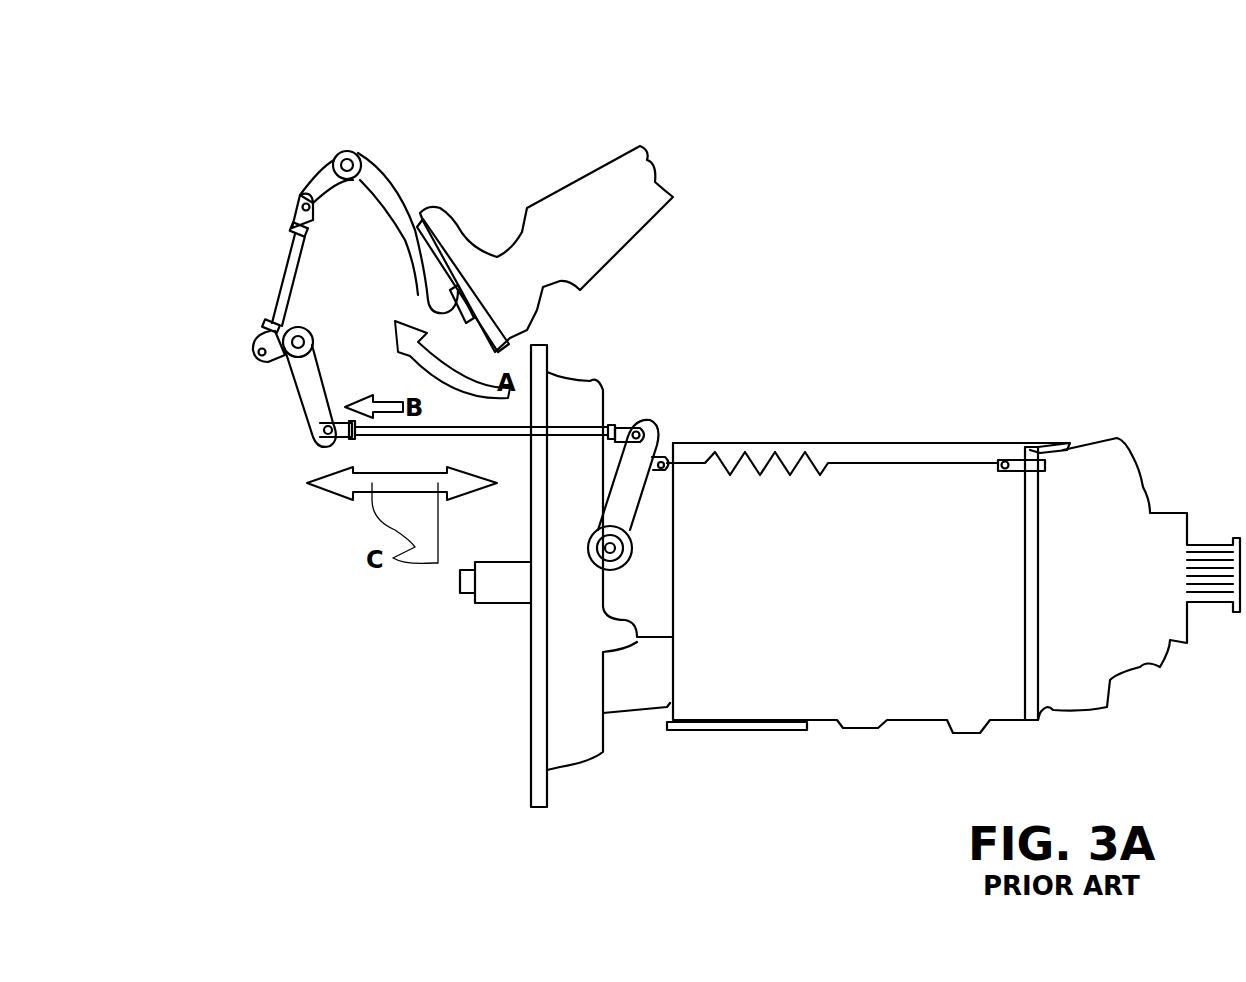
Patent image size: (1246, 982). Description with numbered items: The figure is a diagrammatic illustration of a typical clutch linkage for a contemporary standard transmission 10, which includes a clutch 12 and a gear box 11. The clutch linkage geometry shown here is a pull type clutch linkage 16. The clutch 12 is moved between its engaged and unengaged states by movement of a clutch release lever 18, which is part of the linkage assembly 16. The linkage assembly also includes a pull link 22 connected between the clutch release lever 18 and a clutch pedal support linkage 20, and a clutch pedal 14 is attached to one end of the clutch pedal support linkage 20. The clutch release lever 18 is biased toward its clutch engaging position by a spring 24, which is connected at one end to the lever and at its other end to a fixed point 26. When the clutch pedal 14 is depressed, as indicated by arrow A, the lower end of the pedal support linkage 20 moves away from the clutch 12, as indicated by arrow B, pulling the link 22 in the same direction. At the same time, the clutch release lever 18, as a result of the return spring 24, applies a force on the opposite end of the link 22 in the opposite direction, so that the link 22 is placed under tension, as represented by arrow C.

The standard transmission 10 is at (856, 828).
The gear box 11 is at (900, 690).
The clutch 12 is at (577, 740).
The clutch pedal 14 is at (383, 185).
The pull type clutch linkage 16 is at (300, 443).
The clutch release lever 18 is at (630, 490).
The clutch pedal support linkage 20 is at (246, 333).
The pull link 22 is at (603, 388).
The spring 24 is at (787, 473).
The fixed point 26 is at (1020, 468).